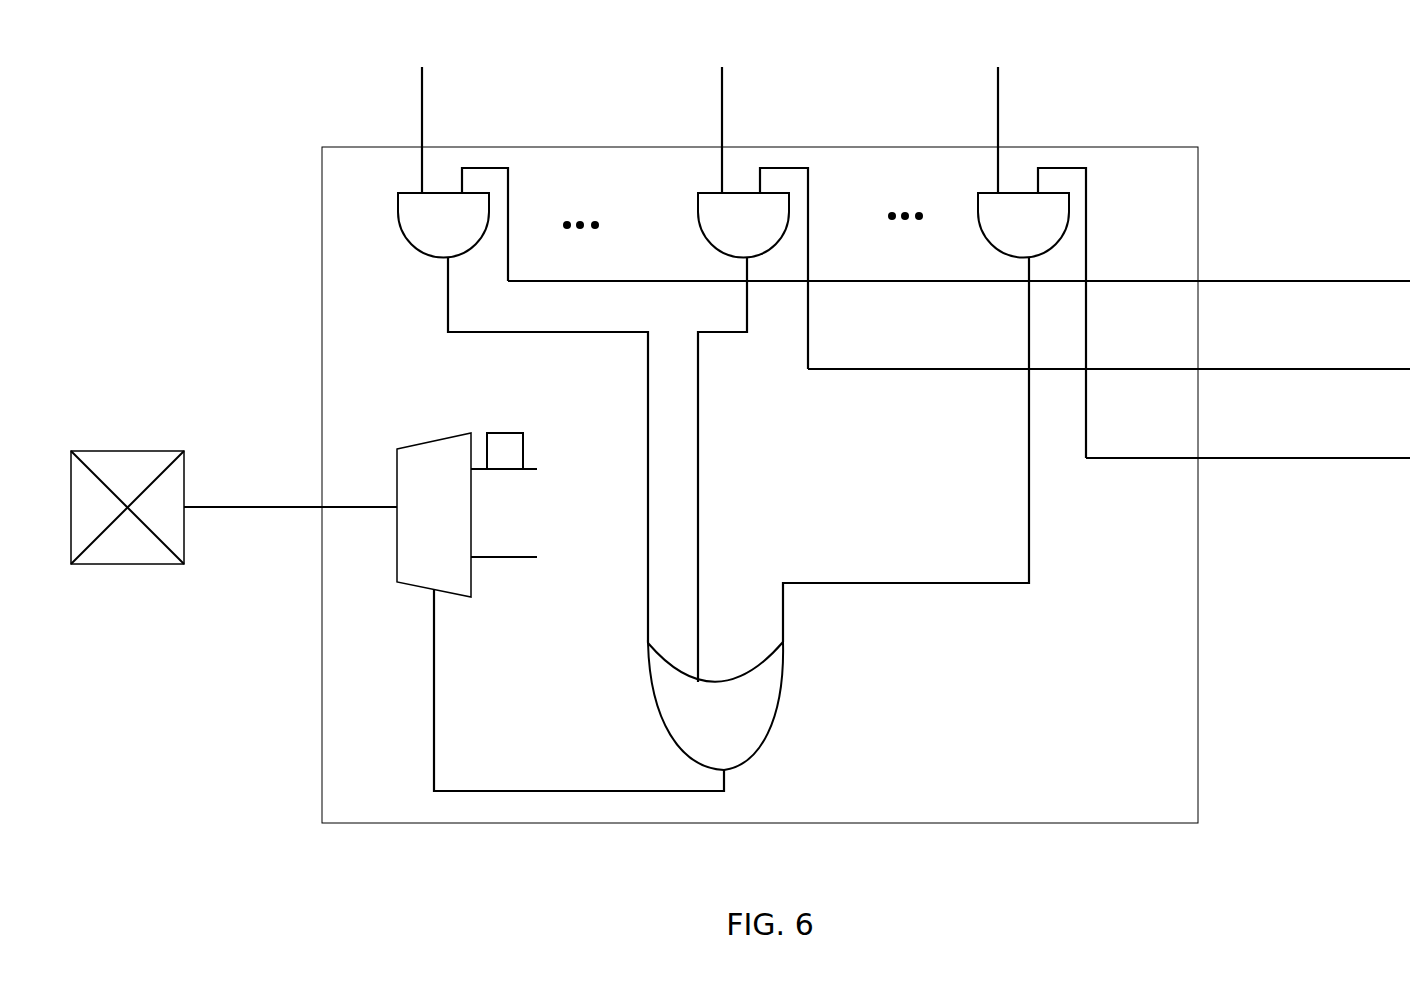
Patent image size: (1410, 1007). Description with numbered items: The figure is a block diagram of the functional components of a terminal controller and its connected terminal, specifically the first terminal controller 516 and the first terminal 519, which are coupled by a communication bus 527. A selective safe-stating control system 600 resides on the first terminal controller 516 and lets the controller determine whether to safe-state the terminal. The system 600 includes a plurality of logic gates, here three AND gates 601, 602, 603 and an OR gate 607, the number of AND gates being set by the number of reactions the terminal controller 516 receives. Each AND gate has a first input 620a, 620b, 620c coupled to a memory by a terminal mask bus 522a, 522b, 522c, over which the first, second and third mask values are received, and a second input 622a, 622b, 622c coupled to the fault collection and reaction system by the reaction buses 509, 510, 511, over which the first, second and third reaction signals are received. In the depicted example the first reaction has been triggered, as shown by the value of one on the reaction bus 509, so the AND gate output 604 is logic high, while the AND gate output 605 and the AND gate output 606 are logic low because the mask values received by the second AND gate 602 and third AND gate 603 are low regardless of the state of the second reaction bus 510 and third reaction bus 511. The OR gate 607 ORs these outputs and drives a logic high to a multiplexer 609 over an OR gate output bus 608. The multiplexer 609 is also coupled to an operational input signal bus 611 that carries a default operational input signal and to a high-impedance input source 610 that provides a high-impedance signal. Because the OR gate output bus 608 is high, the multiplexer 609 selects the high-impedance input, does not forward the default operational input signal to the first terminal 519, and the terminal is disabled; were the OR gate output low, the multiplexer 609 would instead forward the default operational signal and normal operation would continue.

The selective safe-stating control system 600 is at (1125, 862).
The first terminal controller 516 is at (1041, 772).
The first terminal 519 is at (120, 449).
The communication bus 527 is at (205, 508).
The multiplexer 609 is at (426, 520).
The high-impedance input source 610 is at (507, 472).
The operational input signal bus 611 is at (510, 560).
The OR gate output bus 608 is at (434, 715).
The OR gate 607 is at (708, 730).
The AND gate output 604 is at (648, 466).
The AND gate output 605 is at (698, 511).
The AND gate output 606 is at (870, 583).
The AND gate 601 is at (433, 231).
The AND gate 602 is at (728, 231).
The AND gate 603 is at (1009, 231).
The terminal mask bus 522a is at (422, 105).
The terminal mask bus 522b is at (722, 105).
The terminal mask bus 522c is at (998, 92).
The first input 620a is at (420, 191).
The first input 620b is at (721, 191).
The first input 620c is at (997, 191).
The second input 622a is at (462, 193).
The second input 622b is at (760, 193).
The second input 622c is at (1038, 193).
The reaction bus 509 is at (1313, 281).
The second reaction bus 510 is at (1358, 369).
The third reaction bus 511 is at (1320, 460).